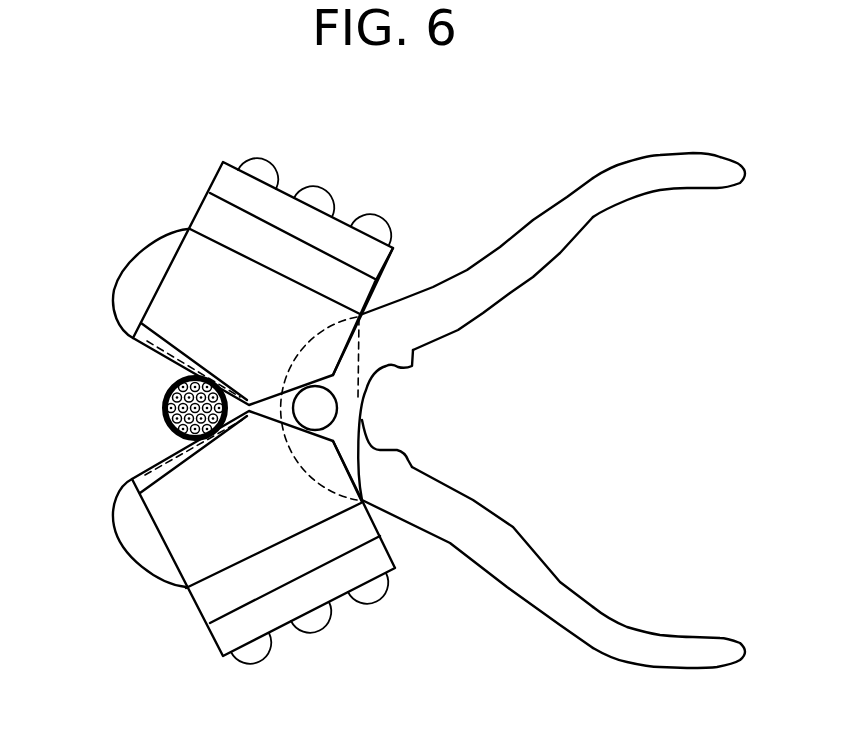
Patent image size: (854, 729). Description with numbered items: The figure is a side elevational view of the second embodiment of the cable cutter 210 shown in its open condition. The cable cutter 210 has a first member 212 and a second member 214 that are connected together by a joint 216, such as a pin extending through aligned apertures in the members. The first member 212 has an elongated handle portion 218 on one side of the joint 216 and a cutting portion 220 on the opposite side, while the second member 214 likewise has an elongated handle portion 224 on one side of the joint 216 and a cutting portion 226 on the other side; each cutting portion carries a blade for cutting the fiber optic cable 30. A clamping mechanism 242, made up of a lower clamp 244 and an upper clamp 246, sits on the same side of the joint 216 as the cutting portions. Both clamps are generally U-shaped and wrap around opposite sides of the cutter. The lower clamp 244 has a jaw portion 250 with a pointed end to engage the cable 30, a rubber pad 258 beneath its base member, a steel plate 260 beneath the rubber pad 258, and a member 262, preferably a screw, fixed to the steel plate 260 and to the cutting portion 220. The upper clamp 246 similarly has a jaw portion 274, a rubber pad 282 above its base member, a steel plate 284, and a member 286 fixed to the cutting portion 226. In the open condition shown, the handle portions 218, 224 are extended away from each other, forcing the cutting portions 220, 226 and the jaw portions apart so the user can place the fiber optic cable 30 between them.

The fiber optic cable 30 is at (163, 400).
The cable cutter 210 is at (438, 151).
The first member 212 is at (530, 243).
The second member 214 is at (510, 572).
The joint 216 is at (320, 410).
The handle portion 218 is at (597, 198).
The cutting portion 220 is at (143, 540).
The handle portion 224 is at (638, 643).
The cutting portion 226 is at (146, 271).
The clamping mechanism 242 is at (303, 160).
The lower clamp 244 is at (196, 565).
The upper clamp 246 is at (210, 242).
The jaw portion 250 is at (160, 503).
The rubber pad 258 is at (358, 523).
The steel plate 260 is at (333, 583).
The member 262 is at (318, 618).
The jaw portion 274 is at (188, 261).
The rubber pad 282 is at (363, 294).
The steel plate 284 is at (397, 250).
The member 286 is at (318, 195).